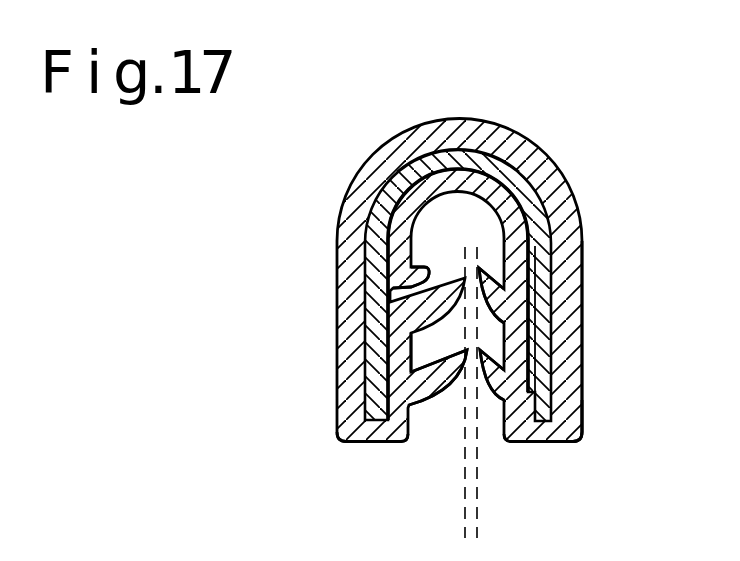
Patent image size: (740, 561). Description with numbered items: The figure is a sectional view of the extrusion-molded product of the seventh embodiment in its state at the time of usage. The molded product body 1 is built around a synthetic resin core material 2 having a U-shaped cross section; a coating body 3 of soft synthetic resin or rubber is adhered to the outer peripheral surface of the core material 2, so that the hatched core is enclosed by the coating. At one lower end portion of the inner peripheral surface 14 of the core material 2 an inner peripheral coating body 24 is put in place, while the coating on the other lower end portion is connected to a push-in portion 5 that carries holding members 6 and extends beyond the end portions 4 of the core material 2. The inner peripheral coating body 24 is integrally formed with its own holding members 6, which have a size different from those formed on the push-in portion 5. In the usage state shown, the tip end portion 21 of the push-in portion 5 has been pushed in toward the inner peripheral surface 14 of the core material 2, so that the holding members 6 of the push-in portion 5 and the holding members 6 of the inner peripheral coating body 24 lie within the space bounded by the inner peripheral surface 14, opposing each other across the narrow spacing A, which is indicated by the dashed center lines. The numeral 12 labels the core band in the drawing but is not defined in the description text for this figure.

The molded product body 1 is at (336, 191).
The synthetic resin core material 2 is at (521, 176).
The coating body 3 is at (557, 288).
The end portions of the core material 4 is at (373, 430).
The push-in portion 5 is at (504, 309).
The holding members 6 is at (433, 387).
The core insert 12 is at (533, 228).
The inner peripheral surface of the core material 14 is at (543, 397).
The tip end portion 21 is at (402, 280).
The inner peripheral coating body 24 is at (405, 354).
The narrow spacing A is at (470, 498).